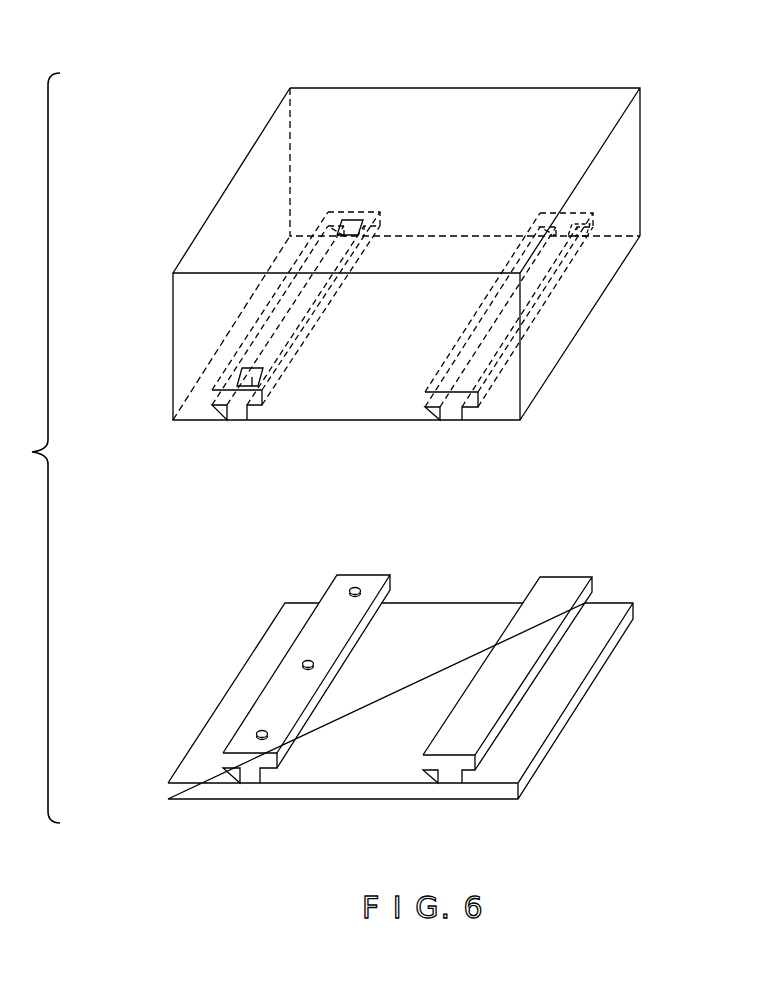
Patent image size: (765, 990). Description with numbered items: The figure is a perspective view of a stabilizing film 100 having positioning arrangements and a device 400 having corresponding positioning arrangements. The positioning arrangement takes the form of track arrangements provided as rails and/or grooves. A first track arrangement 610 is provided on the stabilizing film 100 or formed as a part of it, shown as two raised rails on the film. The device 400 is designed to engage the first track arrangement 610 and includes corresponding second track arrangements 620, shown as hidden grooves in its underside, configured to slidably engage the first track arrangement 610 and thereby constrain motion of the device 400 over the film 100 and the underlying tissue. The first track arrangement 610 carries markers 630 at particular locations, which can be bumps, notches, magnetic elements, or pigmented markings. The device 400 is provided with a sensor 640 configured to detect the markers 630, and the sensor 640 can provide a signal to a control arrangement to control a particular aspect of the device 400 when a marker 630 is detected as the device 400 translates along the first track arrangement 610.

The device 400 is at (609, 107).
The second track arrangement 620 is at (295, 305).
The sensor 640 is at (340, 225).
The stabilizing film 100 is at (563, 682).
The first track arrangement 610 is at (242, 760).
The marker 630 is at (355, 591).